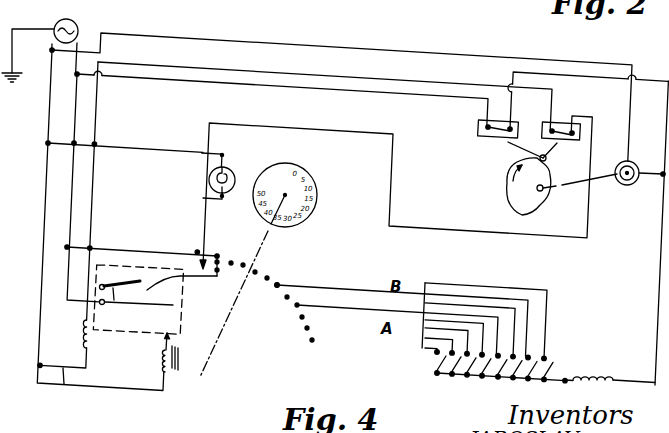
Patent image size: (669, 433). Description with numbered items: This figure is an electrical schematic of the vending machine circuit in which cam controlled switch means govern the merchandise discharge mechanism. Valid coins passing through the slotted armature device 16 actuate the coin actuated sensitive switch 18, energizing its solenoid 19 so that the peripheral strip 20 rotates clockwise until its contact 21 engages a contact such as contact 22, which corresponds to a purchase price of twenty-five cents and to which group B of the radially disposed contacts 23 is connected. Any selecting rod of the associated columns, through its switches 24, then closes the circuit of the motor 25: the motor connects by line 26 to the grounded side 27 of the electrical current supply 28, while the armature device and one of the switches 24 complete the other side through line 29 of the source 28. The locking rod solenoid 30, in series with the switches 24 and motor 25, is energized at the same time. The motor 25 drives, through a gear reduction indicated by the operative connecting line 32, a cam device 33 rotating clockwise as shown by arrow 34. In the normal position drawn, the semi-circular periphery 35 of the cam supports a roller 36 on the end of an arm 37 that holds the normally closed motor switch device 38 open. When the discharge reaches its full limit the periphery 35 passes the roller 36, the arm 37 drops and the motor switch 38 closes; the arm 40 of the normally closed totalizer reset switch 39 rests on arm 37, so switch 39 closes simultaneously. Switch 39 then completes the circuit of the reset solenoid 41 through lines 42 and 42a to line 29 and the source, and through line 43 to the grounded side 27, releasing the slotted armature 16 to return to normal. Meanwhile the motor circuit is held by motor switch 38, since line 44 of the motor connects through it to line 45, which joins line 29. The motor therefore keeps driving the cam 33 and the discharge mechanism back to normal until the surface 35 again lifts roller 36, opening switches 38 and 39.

The slotted armature device 16 is at (234, 335).
The coin actuated sensitive switch 18 is at (118, 265).
The solenoid 19 is at (157, 373).
The peripheral strip 20 is at (182, 292).
The contact 21 is at (217, 254).
The contact 22 is at (279, 285).
The radially disposed contacts 23 is at (269, 272).
The switches 24 is at (514, 382).
The motor 25 is at (636, 168).
The line 26 is at (215, 38).
The grounded side 27 is at (44, 185).
The electrical current supply 28 is at (68, 20).
The line 29 is at (72, 106).
The locking rod solenoid 30 is at (596, 372).
The operative connecting line 32 is at (605, 181).
The cam device 33 is at (517, 213).
The arrow 34 is at (505, 190).
The semi-circular periphery 35 is at (505, 177).
The roller 36 is at (547, 161).
The arm 37 is at (507, 150).
The motor switch device 38 is at (478, 130).
The totalizer reset switch 39 is at (560, 124).
The arm 40 is at (553, 146).
The reset solenoid 41 is at (82, 339).
The line 42 is at (330, 131).
The line 42a is at (148, 248).
The line 43 is at (62, 387).
The line 44 is at (665, 95).
The line 45 is at (253, 86).